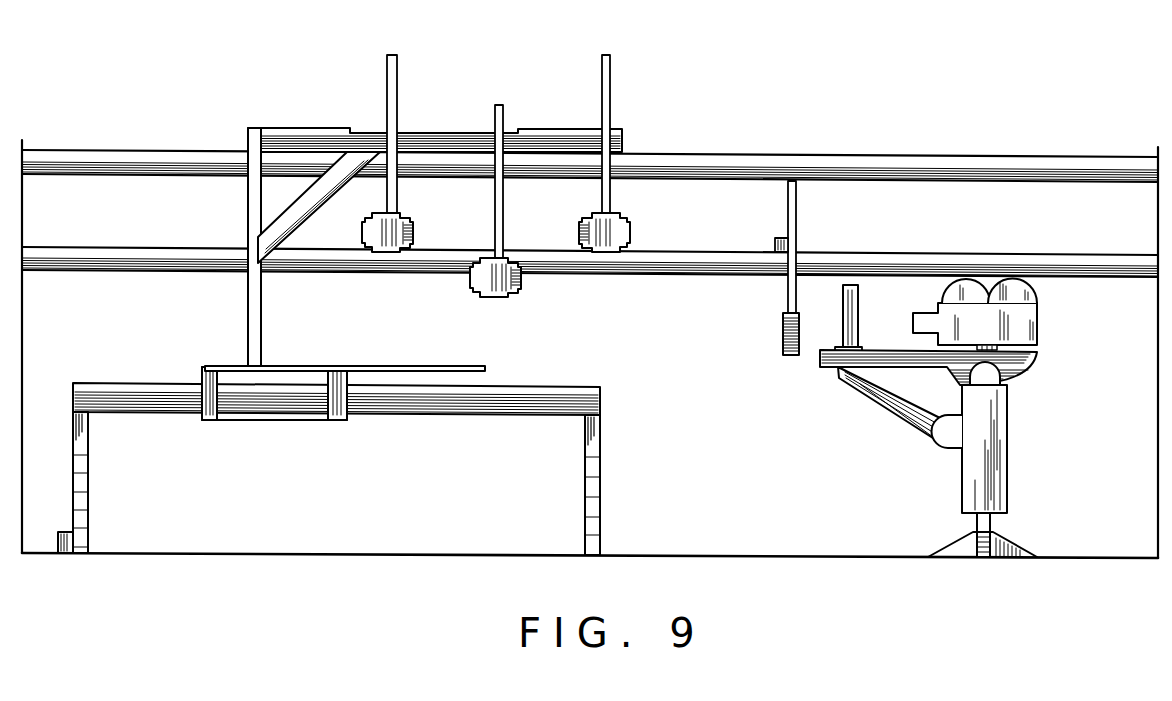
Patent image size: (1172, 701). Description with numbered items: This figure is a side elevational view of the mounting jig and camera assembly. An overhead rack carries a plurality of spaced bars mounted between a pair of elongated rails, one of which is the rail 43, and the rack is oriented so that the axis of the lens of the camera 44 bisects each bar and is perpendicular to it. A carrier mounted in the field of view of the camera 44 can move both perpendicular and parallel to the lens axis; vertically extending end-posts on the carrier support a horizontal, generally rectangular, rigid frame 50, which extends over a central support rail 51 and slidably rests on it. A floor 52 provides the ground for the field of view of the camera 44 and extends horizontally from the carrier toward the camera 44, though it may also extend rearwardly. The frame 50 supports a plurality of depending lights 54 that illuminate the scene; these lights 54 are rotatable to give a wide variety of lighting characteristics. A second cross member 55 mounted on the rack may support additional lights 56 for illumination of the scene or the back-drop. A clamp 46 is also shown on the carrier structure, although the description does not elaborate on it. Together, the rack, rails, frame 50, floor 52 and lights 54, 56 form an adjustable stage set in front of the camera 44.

The elongated rail 43 is at (716, 277).
The camera 44 is at (1038, 302).
The clamp 46 is at (348, 421).
The rigid frame 50 is at (461, 141).
The central support rail 51 is at (936, 152).
The floor 52 is at (457, 366).
The depending lights 54 is at (413, 236).
The second cross member 55 is at (776, 240).
The additional lights 56 is at (795, 356).